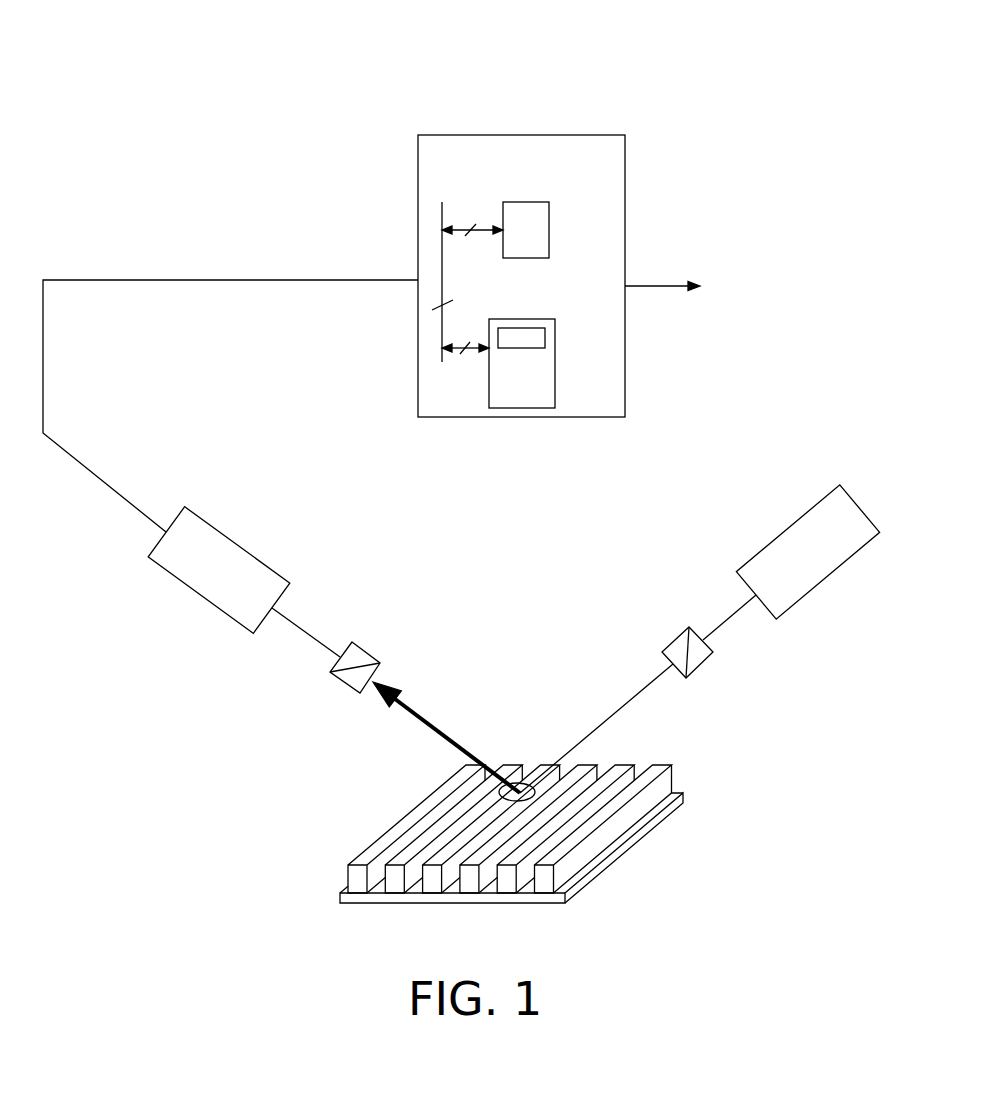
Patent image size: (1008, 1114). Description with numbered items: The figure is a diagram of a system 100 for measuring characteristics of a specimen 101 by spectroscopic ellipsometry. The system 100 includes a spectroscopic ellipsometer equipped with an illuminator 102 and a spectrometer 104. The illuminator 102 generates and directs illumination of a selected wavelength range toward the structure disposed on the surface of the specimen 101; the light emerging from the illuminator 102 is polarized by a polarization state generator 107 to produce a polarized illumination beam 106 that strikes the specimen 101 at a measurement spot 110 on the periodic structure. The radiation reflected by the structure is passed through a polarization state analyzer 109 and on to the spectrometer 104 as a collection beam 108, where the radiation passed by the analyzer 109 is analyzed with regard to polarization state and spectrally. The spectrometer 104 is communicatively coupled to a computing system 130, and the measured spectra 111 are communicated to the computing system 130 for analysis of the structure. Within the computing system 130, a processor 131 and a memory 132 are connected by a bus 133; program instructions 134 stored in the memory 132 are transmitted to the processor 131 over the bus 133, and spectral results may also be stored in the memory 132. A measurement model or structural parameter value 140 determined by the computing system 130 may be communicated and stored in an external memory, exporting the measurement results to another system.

The system 100 is at (200, 94).
The specimen 101 is at (672, 772).
The illuminator 102 is at (790, 563).
The spectrometer 104 is at (200, 578).
The polarized illumination beam 106 is at (651, 683).
The polarization state generator 107 is at (698, 665).
The collection beam 108 is at (407, 715).
The polarization state analyzer 109 is at (336, 684).
The measurement spot 110 is at (500, 792).
The measured spectra 111 is at (295, 299).
The computing system 130 is at (506, 162).
The processor 131 is at (549, 230).
The memory 132 is at (489, 398).
The bus 133 is at (443, 272).
The program instructions 134 is at (545, 338).
The structural parameter value 140 is at (662, 287).